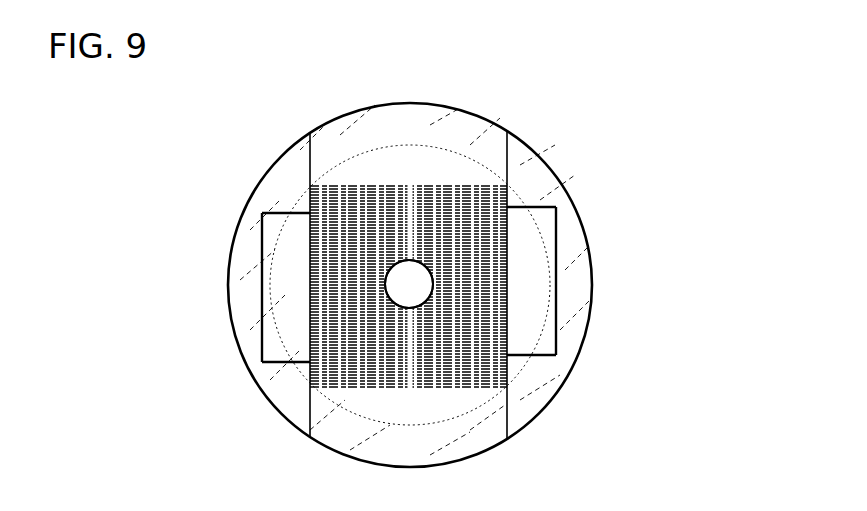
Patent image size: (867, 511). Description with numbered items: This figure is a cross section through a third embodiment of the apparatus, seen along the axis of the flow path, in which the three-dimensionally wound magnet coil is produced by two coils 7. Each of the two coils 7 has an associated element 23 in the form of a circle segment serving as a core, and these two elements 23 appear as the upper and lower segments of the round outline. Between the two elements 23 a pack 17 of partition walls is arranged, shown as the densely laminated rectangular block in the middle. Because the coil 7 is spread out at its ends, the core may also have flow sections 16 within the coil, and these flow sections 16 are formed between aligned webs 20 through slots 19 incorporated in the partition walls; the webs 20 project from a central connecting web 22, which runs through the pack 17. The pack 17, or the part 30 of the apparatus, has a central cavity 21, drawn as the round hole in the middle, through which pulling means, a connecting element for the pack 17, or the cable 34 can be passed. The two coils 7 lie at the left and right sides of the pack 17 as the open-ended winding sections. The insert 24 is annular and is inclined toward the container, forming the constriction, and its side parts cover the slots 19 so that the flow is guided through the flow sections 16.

The coil 7 is at (532, 320).
The flow sections 16 is at (357, 185).
The pack 17 is at (313, 300).
The slots 19 is at (315, 238).
The webs 20 is at (312, 197).
The central cavity 21 is at (405, 290).
The central connecting web 22 is at (412, 200).
The element 23 is at (402, 163).
The insert 24 is at (550, 368).
The part 30 is at (484, 138).
The cable 34 is at (405, 290).